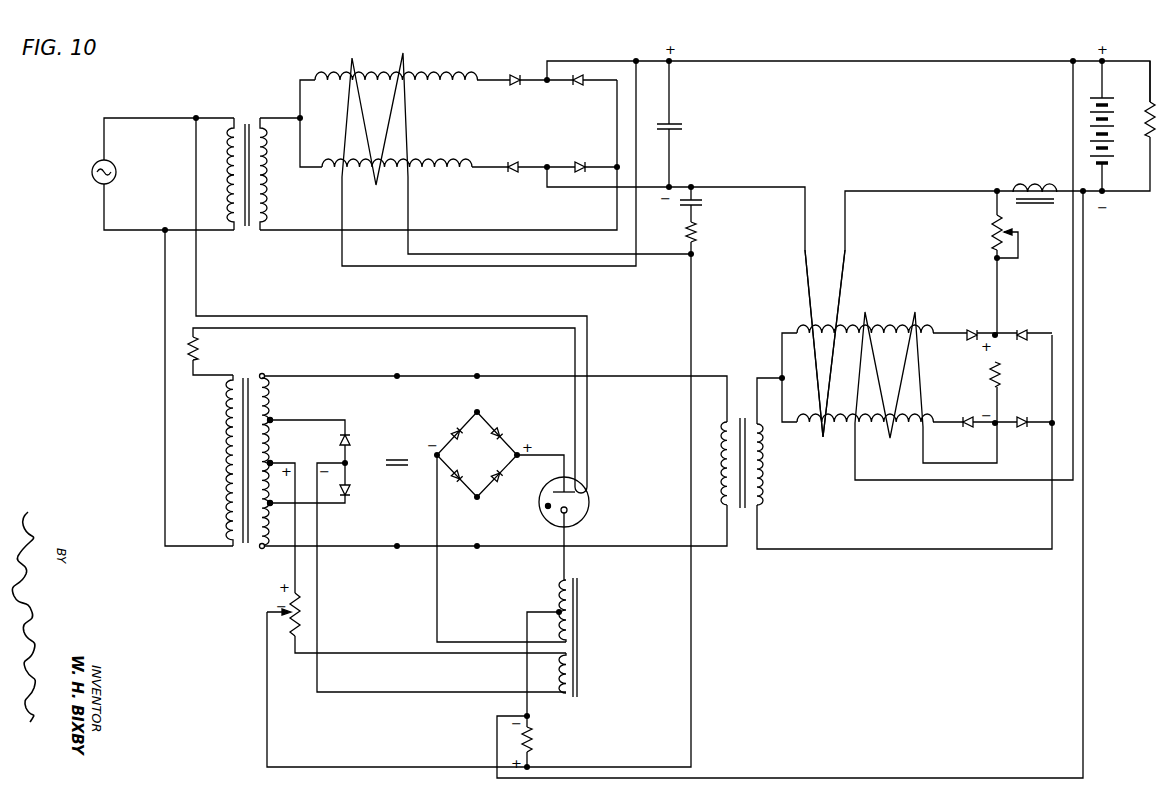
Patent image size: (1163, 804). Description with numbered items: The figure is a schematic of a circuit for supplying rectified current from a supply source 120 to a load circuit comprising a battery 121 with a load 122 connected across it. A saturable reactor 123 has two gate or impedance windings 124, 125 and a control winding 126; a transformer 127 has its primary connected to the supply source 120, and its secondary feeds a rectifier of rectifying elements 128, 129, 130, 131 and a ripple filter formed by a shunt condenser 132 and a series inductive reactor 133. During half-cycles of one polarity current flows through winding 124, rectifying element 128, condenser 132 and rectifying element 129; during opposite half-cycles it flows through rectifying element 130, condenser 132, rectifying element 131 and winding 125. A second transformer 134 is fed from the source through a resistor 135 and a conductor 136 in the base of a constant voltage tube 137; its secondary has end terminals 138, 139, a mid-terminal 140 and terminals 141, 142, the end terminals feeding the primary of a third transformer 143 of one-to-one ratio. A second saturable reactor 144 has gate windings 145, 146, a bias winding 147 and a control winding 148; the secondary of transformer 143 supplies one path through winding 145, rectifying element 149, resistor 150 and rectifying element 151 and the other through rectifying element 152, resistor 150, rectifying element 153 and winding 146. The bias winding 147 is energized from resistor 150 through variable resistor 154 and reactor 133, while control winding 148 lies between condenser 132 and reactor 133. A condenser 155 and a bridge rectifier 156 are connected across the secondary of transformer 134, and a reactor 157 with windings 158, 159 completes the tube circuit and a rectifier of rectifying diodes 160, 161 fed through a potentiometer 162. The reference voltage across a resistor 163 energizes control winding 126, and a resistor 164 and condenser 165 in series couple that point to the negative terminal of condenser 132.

The supply source 120 is at (94, 170).
The battery 121 is at (1088, 120).
The load 122 is at (1148, 140).
The saturable reactor 123 is at (397, 122).
The gate winding 124 is at (439, 72).
The gate winding 125 is at (450, 178).
The control winding 126 is at (406, 120).
The transformer 127 is at (246, 236).
The rectifying element 128 is at (515, 70).
The rectifying element 129 is at (579, 162).
The rectifying element 130 is at (579, 87).
The rectifying element 131 is at (512, 175).
The shunt condenser 132 is at (682, 127).
The series inductive reactor 133 is at (1033, 185).
The second transformer 134 is at (279, 469).
The resistor 135 is at (198, 357).
The conductor 136 is at (589, 495).
The constant voltage tube 137 is at (584, 519).
The end terminal 138 is at (266, 376).
The end terminal 139 is at (263, 551).
The mid-terminal 140 is at (272, 463).
The terminal 141 is at (272, 420).
The terminal 142 is at (272, 504).
The third transformer 143 is at (741, 516).
The second saturable reactor 144 is at (852, 355).
The gate winding 145 is at (890, 320).
The gate winding 146 is at (813, 432).
The bias winding 147 is at (920, 370).
The control winding 148 is at (812, 374).
The rectifying element 149 is at (970, 328).
The resistor 150 is at (998, 378).
The rectifying element 151 is at (1022, 434).
The rectifying element 152 is at (1024, 327).
The rectifying element 153 is at (969, 433).
The variable resistor 154 is at (990, 232).
The condenser 155 is at (402, 456).
The bridge rectifier 156 is at (477, 454).
The reactor 157 is at (584, 639).
The winding 158 is at (570, 585).
The winding 159 is at (574, 700).
The rectifying diode 160 is at (347, 437).
The rectifying diode 161 is at (347, 497).
The potentiometer 162 is at (278, 607).
The resistor 163 is at (532, 742).
The resistor 164 is at (698, 241).
The condenser 165 is at (701, 204).